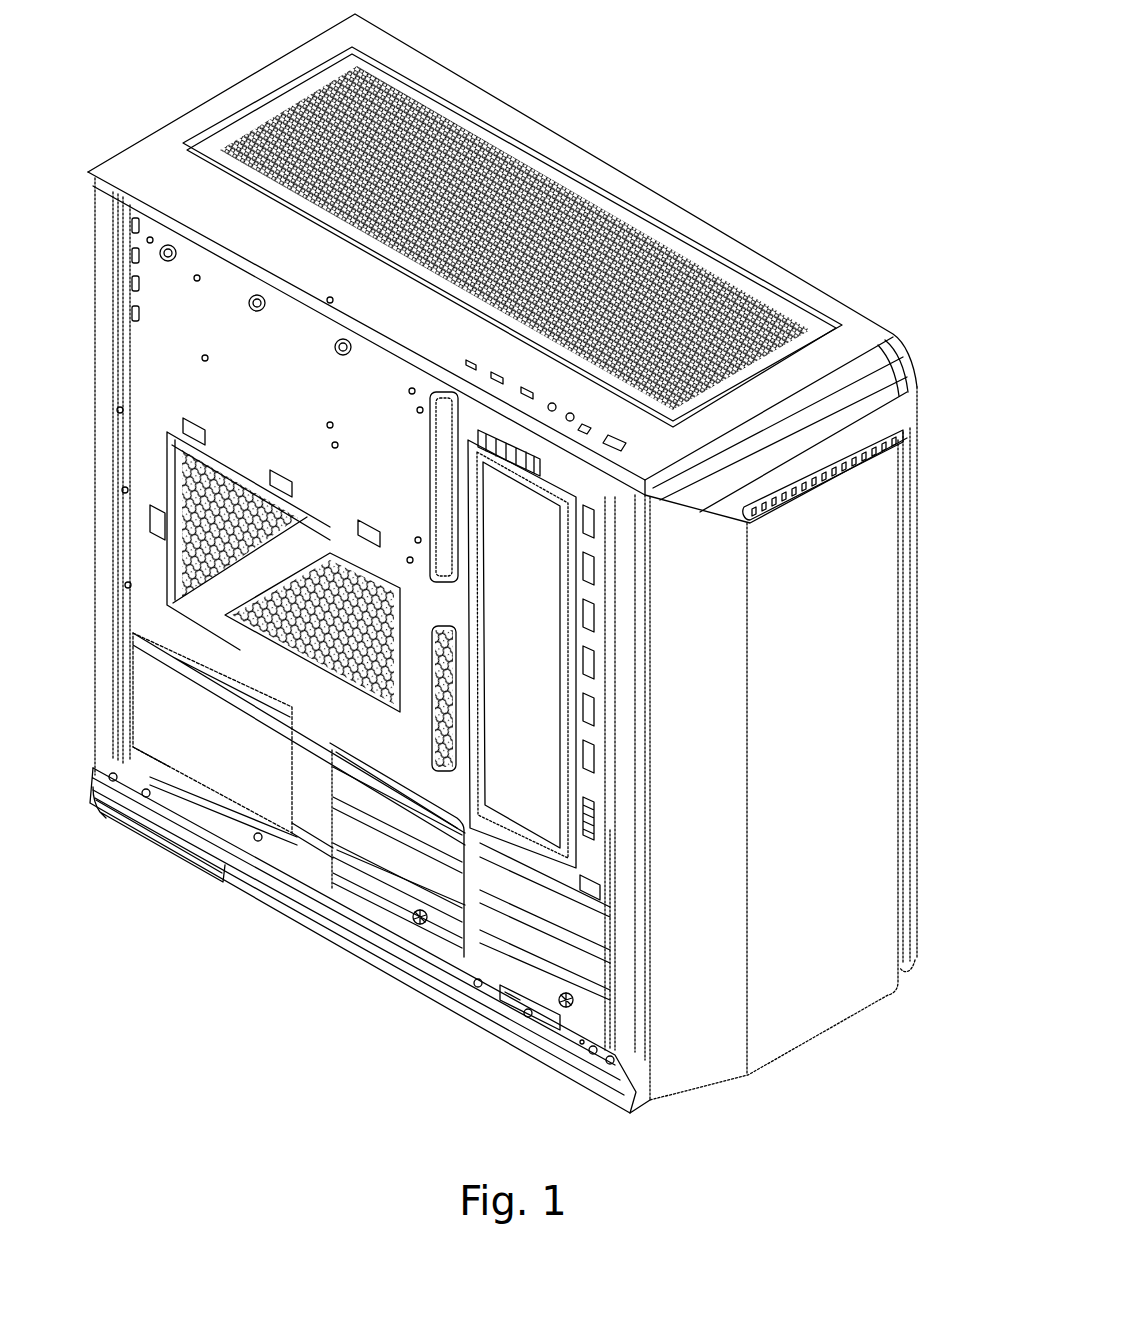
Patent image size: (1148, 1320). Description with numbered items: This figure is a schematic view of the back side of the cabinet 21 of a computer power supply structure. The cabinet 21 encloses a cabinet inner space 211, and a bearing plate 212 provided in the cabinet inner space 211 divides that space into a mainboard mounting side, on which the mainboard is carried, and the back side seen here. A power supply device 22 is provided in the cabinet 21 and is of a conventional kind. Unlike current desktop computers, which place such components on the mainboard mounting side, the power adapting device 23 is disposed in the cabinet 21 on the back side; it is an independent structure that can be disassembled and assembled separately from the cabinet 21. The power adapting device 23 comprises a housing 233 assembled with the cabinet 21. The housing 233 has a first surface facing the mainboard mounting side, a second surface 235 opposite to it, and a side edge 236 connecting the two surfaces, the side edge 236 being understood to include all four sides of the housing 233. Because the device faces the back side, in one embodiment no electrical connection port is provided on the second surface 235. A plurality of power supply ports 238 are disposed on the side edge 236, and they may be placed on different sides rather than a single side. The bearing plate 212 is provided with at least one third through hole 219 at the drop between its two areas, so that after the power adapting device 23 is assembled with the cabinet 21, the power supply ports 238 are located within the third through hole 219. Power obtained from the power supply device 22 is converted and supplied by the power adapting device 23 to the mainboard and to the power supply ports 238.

The cabinet 21 is at (105, 252).
The cabinet inner space 211 is at (128, 778).
The bearing plate 212 is at (195, 310).
The third through hole 219 is at (455, 425).
The power supply device 22 is at (262, 792).
The power adapting device 23 is at (613, 487).
The housing 233 is at (490, 860).
The second surface 235 is at (515, 860).
The side edge 236 is at (587, 868).
The power supply ports 238 is at (598, 825).